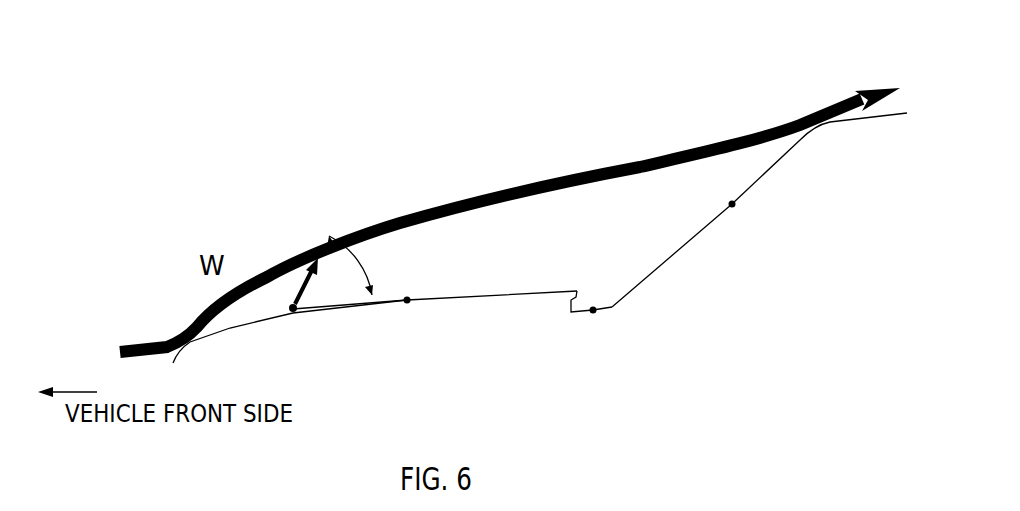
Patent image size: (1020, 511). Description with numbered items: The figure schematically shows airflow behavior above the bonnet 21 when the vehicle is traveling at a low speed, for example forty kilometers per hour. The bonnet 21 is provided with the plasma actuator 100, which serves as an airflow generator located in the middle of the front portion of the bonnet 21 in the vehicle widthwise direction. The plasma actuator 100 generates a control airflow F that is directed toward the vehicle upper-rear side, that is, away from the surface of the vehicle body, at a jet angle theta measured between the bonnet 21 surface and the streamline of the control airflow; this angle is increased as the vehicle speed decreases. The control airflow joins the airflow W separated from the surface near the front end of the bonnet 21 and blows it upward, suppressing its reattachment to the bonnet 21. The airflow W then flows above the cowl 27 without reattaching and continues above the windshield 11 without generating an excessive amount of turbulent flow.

The plasma actuator 100 is at (293, 306).
The bonnet 21 is at (407, 300).
The cowl 27 is at (593, 308).
The windshield 11 is at (732, 204).